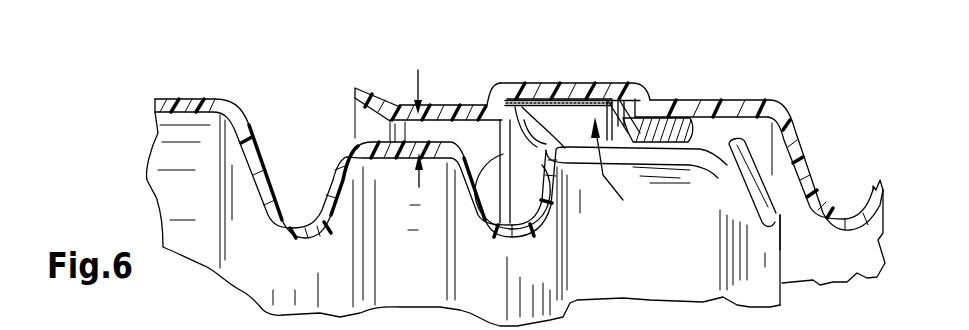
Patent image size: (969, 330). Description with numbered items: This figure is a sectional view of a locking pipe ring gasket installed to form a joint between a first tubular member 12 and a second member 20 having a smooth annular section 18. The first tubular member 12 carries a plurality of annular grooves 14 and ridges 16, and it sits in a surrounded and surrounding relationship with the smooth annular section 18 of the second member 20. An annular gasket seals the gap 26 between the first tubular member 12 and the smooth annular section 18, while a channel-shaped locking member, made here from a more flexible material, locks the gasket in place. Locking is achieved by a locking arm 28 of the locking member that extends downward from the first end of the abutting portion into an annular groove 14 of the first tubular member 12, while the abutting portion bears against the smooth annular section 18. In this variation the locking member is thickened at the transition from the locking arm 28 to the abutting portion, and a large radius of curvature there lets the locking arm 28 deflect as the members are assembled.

The first tubular member 12 is at (196, 99).
The annular groove 14 is at (293, 230).
The ridge 16 is at (400, 108).
The smooth annular section 18 is at (782, 123).
The second member 20 is at (798, 138).
The gap 26 is at (431, 66).
The locking arm 28 is at (478, 186).